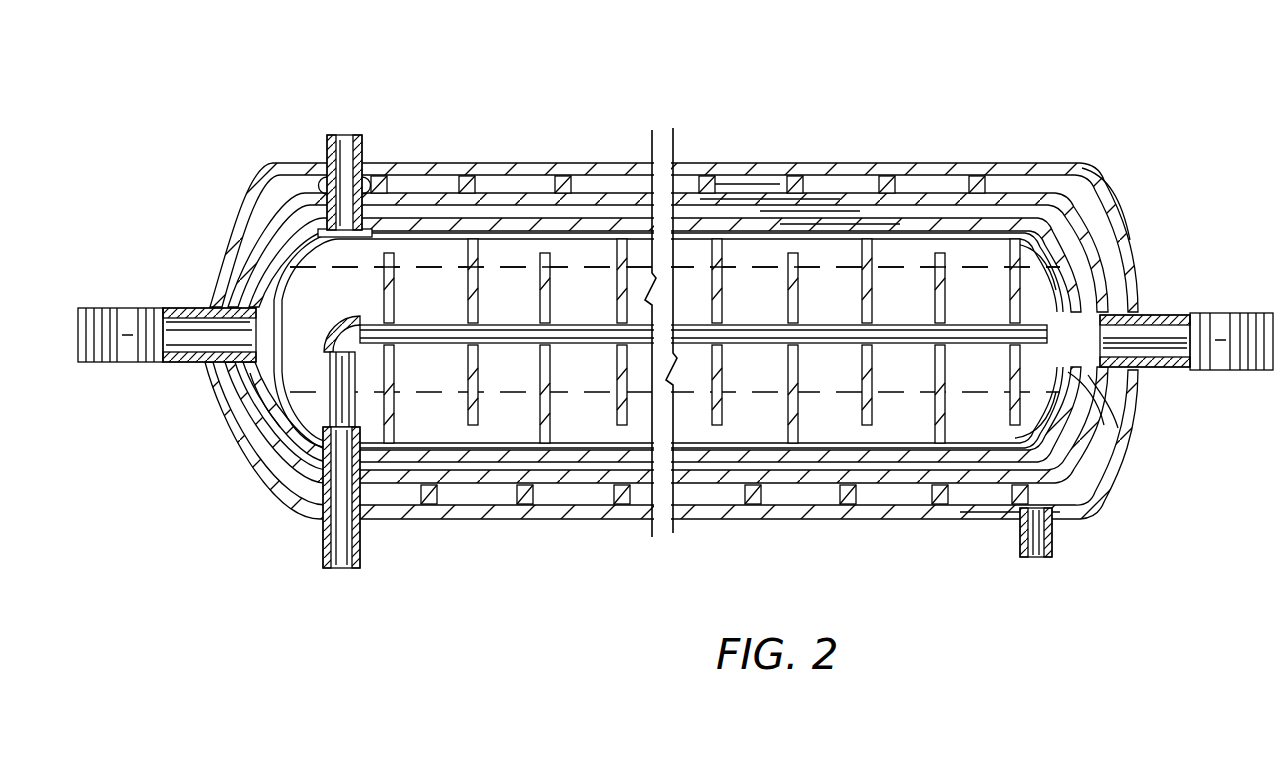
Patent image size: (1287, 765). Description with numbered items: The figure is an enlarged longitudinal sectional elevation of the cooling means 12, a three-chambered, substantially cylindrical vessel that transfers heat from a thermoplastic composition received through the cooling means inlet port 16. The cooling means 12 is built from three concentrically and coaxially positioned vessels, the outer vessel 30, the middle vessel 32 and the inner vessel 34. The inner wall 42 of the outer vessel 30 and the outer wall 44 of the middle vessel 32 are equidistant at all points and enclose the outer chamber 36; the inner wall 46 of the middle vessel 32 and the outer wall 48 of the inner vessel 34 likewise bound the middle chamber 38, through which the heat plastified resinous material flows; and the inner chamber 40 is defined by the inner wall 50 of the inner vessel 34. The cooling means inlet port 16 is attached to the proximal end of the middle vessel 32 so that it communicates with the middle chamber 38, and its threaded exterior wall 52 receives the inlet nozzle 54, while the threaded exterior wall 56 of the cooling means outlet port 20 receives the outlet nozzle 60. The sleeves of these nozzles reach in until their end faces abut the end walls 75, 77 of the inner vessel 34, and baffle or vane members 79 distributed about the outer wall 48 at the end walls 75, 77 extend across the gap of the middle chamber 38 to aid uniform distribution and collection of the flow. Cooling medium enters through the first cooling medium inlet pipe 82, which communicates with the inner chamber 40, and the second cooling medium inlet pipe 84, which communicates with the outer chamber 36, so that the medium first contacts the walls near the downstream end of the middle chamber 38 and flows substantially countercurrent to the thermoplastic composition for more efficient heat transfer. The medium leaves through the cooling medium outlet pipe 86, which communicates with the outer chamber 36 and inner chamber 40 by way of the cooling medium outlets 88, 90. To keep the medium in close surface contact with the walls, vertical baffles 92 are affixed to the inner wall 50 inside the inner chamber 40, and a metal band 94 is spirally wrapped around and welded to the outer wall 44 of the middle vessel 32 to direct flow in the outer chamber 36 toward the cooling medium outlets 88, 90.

The cooling means 12 is at (221, 138).
The cooling means inlet port 16 is at (170, 290).
The cooling means outlet port 20 is at (1198, 310).
The outer vessel 30 is at (420, 162).
The middle vessel 32 is at (447, 193).
The inner vessel 34 is at (488, 218).
The outer chamber 36 is at (1018, 180).
The middle chamber 38 is at (1000, 468).
The inner chamber 40 is at (1045, 292).
The inner wall of outer vessel 42 is at (740, 184).
The outer wall of middle vessel 44 is at (770, 194).
The inner wall of middle vessel 46 is at (818, 209).
The outer wall of inner vessel 48 is at (860, 220).
The inner wall of inner vessel 50 is at (930, 238).
The exterior wall of cooling means inlet port 52 is at (190, 366).
The inlet nozzle 54 is at (120, 366).
The exterior wall of cooling means outlet port 56 is at (1160, 368).
The outlet nozzle 60 is at (1225, 372).
The end wall of inner vessel 75 is at (263, 405).
The end wall of inner vessel 77 is at (1085, 410).
The baffle or vane members 79 is at (240, 410).
The first cooling medium inlet pipe 82 is at (330, 542).
The second cooling medium inlet pipe 84 is at (1040, 530).
The cooling medium outlet pipe 86 is at (350, 135).
The cooling medium outlet 88 is at (322, 180).
The cooling medium outlet 90 is at (334, 238).
The vertical baffles 92 is at (612, 372).
The metal band 94 is at (556, 180).